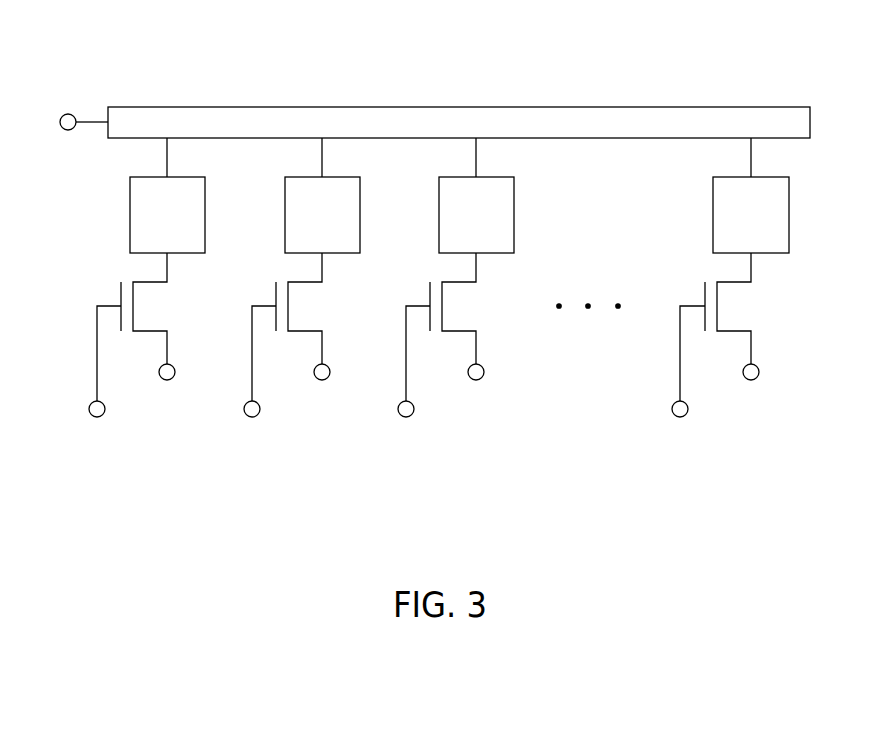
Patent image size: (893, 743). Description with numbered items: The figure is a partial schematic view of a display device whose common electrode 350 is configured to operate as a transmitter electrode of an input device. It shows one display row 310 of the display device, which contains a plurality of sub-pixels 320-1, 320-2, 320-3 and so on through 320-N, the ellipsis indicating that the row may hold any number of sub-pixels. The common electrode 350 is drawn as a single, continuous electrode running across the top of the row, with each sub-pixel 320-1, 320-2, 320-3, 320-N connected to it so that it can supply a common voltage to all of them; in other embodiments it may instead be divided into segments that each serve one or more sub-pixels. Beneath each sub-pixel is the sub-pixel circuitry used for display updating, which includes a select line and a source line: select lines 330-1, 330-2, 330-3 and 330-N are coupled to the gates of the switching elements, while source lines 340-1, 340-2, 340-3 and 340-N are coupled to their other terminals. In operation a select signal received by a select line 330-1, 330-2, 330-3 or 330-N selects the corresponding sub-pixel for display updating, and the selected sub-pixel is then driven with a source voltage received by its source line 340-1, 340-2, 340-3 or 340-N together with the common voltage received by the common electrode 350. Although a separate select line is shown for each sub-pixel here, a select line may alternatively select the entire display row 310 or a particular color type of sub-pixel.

The display row 310 is at (73, 210).
The common electrode 350 is at (400, 107).
The sub-pixel 320-1 is at (194, 224).
The sub-pixel 320-2 is at (349, 224).
The sub-pixel 320-3 is at (503, 224).
The sub-pixel 320-N is at (781, 224).
The select line 330-1 is at (96, 424).
The select line 330-2 is at (251, 424).
The select line 330-3 is at (405, 424).
The select line 330-N is at (680, 424).
The source line 340-1 is at (166, 386).
The source line 340-2 is at (321, 386).
The source line 340-3 is at (475, 386).
The source line 340-N is at (750, 386).